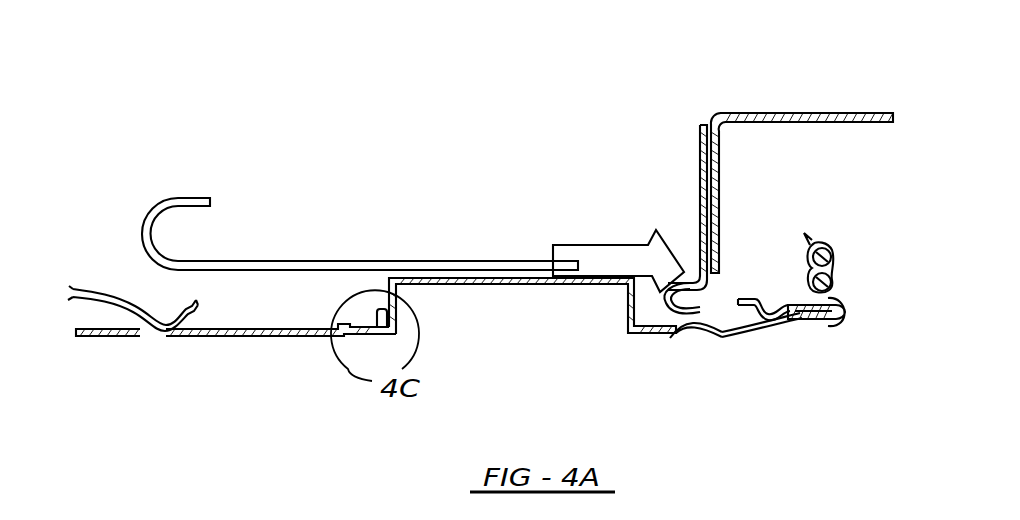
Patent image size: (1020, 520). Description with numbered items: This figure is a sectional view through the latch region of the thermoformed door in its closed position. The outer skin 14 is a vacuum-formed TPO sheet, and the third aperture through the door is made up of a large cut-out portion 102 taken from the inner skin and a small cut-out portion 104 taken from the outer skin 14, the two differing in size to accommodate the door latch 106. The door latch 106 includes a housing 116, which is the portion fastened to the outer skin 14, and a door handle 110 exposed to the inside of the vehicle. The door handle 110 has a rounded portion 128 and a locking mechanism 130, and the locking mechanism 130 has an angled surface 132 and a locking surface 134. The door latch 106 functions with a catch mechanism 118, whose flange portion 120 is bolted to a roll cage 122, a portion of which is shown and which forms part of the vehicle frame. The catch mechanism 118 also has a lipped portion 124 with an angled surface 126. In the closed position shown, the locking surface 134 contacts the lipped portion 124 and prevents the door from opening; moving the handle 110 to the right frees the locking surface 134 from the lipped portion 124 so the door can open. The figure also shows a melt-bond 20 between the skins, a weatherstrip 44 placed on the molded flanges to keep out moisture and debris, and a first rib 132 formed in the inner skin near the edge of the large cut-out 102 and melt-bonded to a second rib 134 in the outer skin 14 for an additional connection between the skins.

The outer skin 14 is at (243, 336).
The melt-bond 20 is at (172, 347).
The weatherstrip 44 is at (833, 262).
The large cut-out portion 102 is at (186, 308).
The small cut-out portion 104 is at (395, 292).
The door latch 106 is at (462, 160).
The door handle 110 is at (268, 267).
The housing 116 is at (391, 285).
The catch mechanism 118 is at (684, 150).
The flange portion 120 is at (690, 140).
The roll cage 122 is at (808, 123).
The lipped portion 124 is at (744, 333).
The angled surface 126 is at (713, 311).
The rounded portion 128 is at (183, 197).
The locking mechanism 130 is at (592, 258).
The first rib 132 is at (168, 328).
The second rib 134 is at (146, 334).